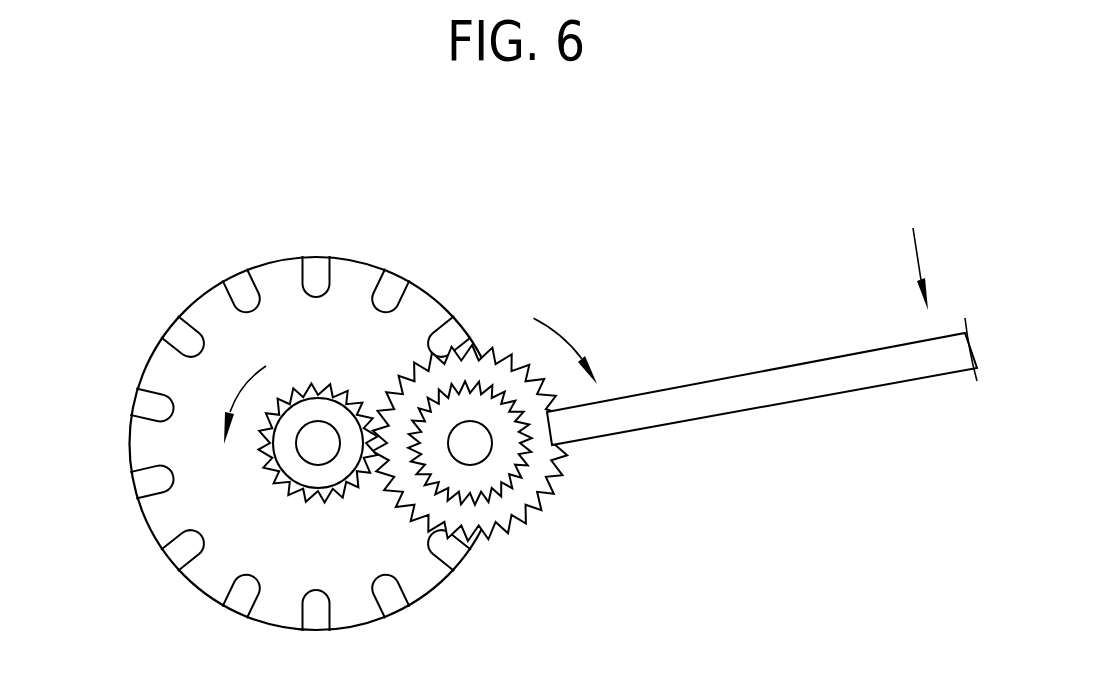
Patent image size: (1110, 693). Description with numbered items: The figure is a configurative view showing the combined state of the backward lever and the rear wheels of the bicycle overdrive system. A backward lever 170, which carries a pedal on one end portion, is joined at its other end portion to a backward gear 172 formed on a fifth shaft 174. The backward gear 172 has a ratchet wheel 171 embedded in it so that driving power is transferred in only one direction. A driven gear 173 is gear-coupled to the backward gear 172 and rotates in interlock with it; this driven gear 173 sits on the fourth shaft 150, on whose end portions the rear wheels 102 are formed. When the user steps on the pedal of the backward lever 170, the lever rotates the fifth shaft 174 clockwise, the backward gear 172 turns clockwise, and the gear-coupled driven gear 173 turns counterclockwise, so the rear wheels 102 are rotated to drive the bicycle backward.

The rear wheel 102 is at (157, 370).
The fourth shaft 150 is at (315, 430).
The backward lever 170 is at (828, 373).
The ratchet wheel 171 is at (525, 472).
The backward gear 172 is at (525, 522).
The driven gear 173 is at (277, 482).
The fifth shaft 174 is at (472, 430).